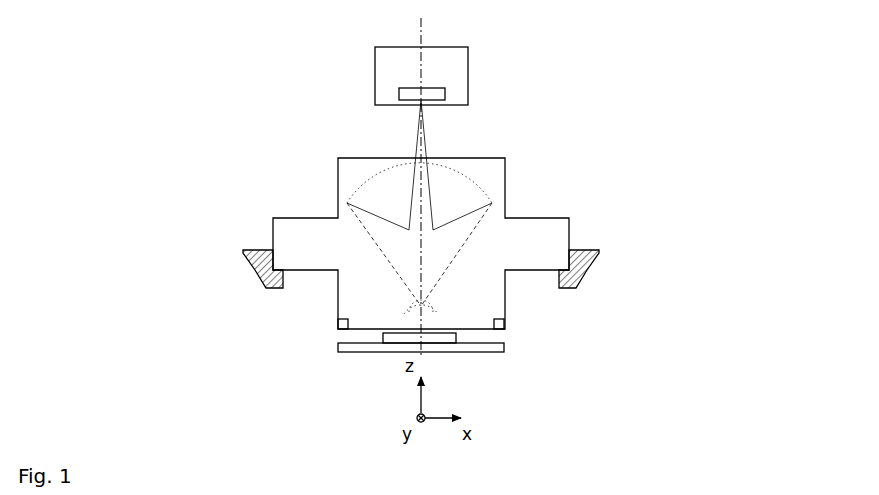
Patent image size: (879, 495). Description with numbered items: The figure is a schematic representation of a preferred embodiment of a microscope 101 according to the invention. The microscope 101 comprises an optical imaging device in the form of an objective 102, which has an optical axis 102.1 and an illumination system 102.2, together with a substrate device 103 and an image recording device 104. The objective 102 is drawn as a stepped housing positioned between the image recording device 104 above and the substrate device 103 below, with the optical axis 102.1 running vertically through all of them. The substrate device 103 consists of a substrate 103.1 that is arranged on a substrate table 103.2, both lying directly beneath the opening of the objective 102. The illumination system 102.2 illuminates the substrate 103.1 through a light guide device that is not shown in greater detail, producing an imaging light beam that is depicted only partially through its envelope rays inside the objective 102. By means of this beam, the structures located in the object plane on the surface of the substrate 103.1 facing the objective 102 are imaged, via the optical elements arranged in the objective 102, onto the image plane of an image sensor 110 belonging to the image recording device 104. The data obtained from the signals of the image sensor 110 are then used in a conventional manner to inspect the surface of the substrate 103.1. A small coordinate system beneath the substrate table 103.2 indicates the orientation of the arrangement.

The microscope 101 is at (548, 47).
The objective 102 is at (531, 198).
The optical axis 102.1 is at (421, 25).
The illumination system 102.2 is at (508, 326).
The substrate device 103 is at (516, 346).
The substrate 103.1 is at (383, 337).
The substrate table 103.2 is at (337, 347).
The image recording device 104 is at (375, 75).
The image sensor 110 is at (447, 93).